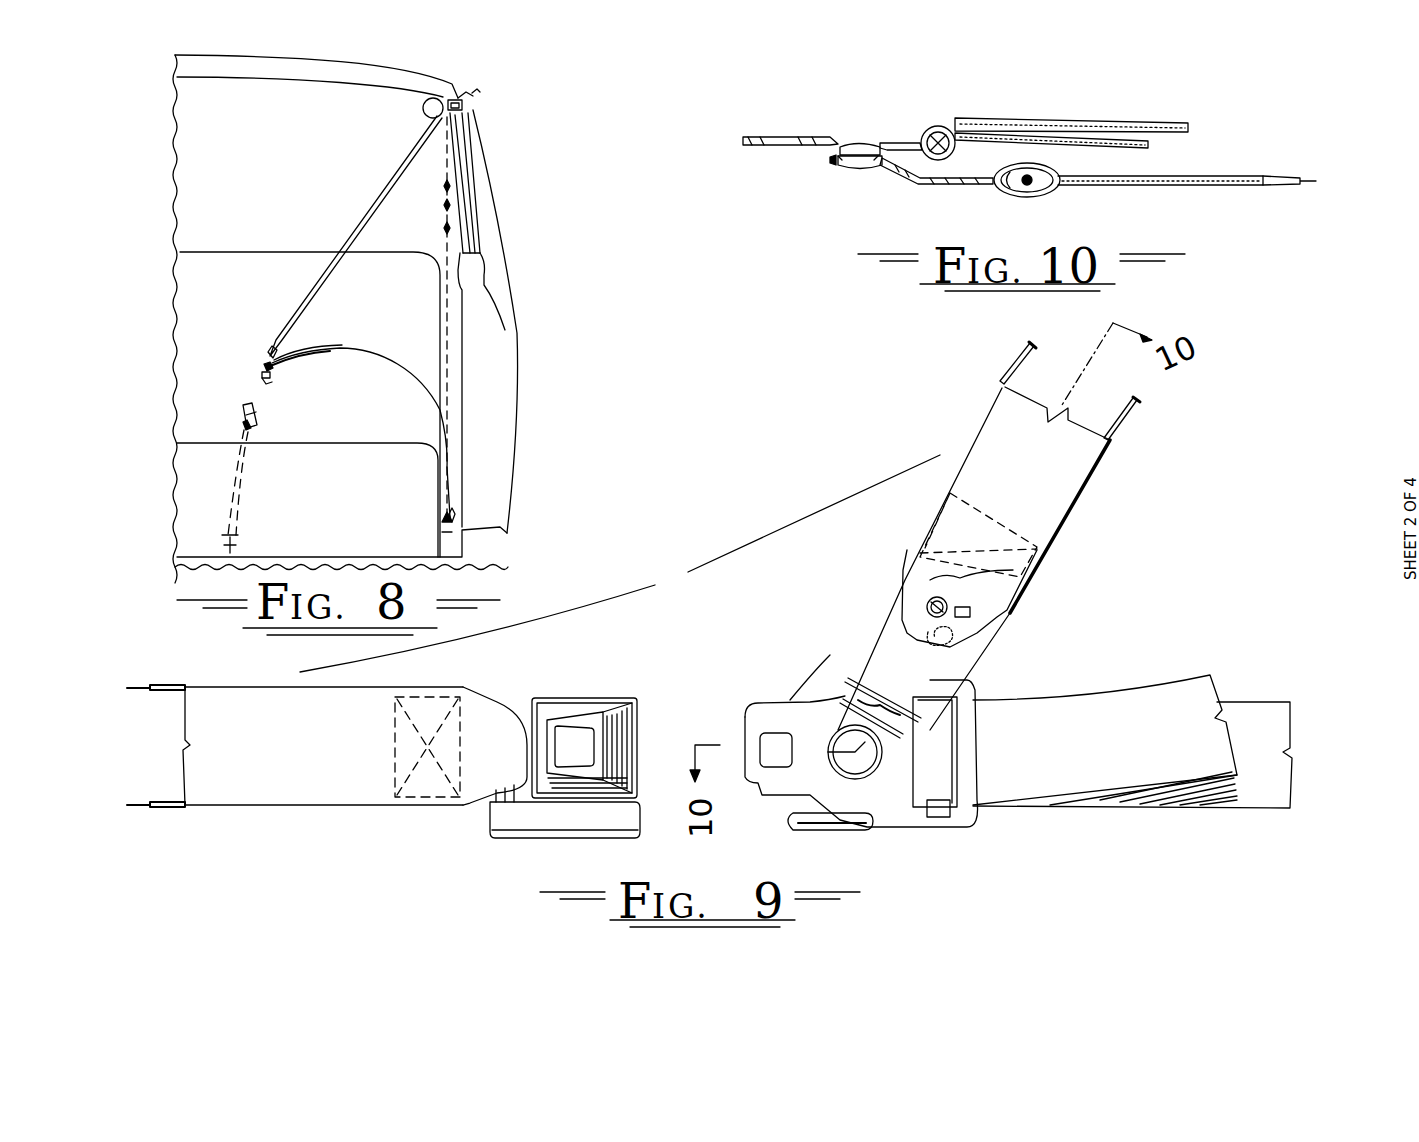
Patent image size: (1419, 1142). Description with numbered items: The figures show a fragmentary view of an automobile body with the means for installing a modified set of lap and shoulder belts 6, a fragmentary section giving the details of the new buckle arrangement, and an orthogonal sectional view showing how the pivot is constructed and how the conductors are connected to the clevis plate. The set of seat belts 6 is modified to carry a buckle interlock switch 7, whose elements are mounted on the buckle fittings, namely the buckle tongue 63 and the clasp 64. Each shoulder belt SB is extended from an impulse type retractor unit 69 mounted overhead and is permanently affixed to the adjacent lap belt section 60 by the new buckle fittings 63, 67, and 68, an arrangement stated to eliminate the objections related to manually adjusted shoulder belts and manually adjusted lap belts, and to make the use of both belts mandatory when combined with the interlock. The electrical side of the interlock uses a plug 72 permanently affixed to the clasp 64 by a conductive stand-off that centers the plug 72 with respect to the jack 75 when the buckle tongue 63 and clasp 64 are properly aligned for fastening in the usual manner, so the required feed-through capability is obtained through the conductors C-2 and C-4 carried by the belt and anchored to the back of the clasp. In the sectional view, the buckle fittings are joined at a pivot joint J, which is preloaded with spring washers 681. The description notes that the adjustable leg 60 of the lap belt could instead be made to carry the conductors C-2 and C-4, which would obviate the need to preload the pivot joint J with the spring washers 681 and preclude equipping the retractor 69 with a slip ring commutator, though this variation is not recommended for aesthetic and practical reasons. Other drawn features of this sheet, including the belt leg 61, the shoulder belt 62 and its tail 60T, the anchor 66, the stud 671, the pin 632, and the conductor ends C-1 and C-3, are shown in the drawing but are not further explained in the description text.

In FIG. 9, the seat belts 6 is at (620, 563).
In FIG. 9, the buckle interlock switch 7 is at (790, 849).
In FIG. 8, the lap belt section 60 is at (380, 357).
In FIG. 10, the lap belt section 60 is at (1168, 125).
In FIG. 9, the lap belt section 60 is at (1290, 703).
In FIG. 8, the lap belt tongue portion 60T is at (330, 350).
In FIG. 10, the lap belt tongue portion 60T is at (1148, 147).
In FIG. 9, the lap belt tongue portion 60T is at (1210, 675).
In FIG. 8, the inboard belt 61 is at (238, 505).
In FIG. 9, the inboard belt 61 is at (180, 747).
In FIG. 8, the shoulder belt SB 62 is at (358, 218).
In FIG. 10, the shoulder belt SB 62 is at (1148, 186).
In FIG. 9, the shoulder belt SB 62 is at (1028, 468).
In FIG. 8, the buckle tongue 63 is at (266, 386).
In FIG. 10, the buckle tongue 63 is at (805, 135).
In FIG. 9, the buckle tongue 63 is at (795, 702).
In FIG. 10, the pivot pin 632 is at (930, 128).
In FIG. 9, the pivot pin 632 is at (950, 818).
In FIG. 8, the clasp 64 is at (243, 407).
In FIG. 9, the clasp 64 is at (575, 697).
In FIG. 8, the floor anchor 66 is at (452, 528).
In FIG. 8, the buckle fitting 67 is at (265, 362).
In FIG. 10, the buckle fitting 67 is at (937, 185).
In FIG. 9, the buckle fitting 67 is at (858, 640).
In FIG. 10, the link rivet 671 is at (1027, 187).
In FIG. 9, the link rivet 671 is at (928, 605).
In FIG. 8, the buckle fitting 68 is at (264, 380).
In FIG. 10, the buckle fitting 68 is at (840, 170).
In FIG. 9, the buckle fitting 68 is at (820, 672).
In FIG. 10, the spring washers 681 is at (832, 155).
In FIG. 8, the impulse type retractor unit 69 is at (423, 108).
In FIG. 8, the plug 72 is at (272, 380).
In FIG. 9, the plug 72 is at (825, 830).
In FIG. 8, the jack 75 is at (258, 416).
In FIG. 9, the jack 75 is at (560, 838).
In FIG. 10, the pivot joint J is at (827, 178).
In FIG. 9, the pivot joint J is at (808, 690).
In FIG. 9, the connector end 1 C-1 is at (127, 806).
In FIG. 10, the conductor C-2 is at (1316, 181).
In FIG. 9, the conductor C-2 is at (1138, 410).
In FIG. 9, the connector end 3 C-3 is at (127, 687).
In FIG. 9, the conductor C-4 is at (1028, 342).